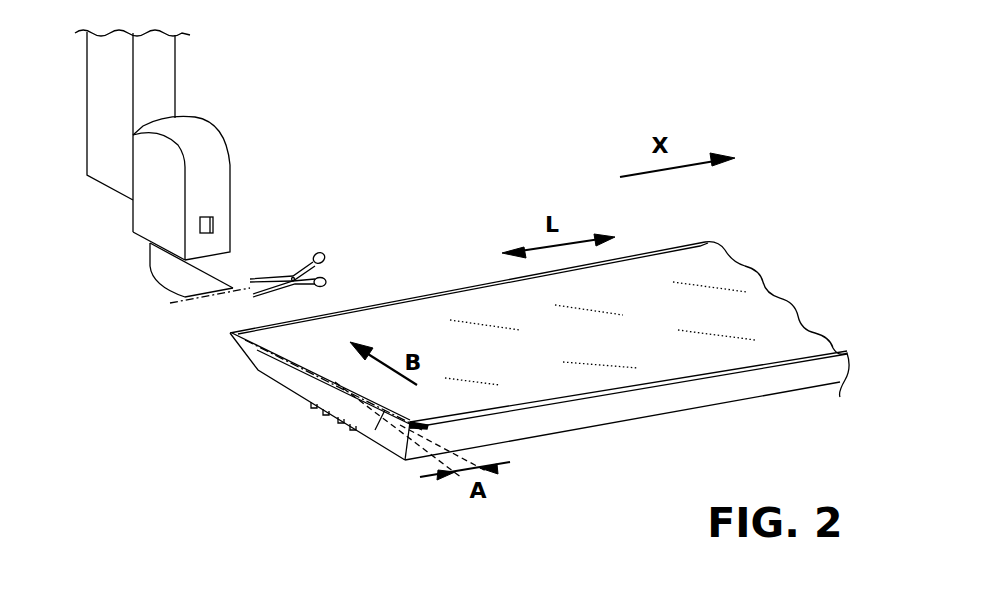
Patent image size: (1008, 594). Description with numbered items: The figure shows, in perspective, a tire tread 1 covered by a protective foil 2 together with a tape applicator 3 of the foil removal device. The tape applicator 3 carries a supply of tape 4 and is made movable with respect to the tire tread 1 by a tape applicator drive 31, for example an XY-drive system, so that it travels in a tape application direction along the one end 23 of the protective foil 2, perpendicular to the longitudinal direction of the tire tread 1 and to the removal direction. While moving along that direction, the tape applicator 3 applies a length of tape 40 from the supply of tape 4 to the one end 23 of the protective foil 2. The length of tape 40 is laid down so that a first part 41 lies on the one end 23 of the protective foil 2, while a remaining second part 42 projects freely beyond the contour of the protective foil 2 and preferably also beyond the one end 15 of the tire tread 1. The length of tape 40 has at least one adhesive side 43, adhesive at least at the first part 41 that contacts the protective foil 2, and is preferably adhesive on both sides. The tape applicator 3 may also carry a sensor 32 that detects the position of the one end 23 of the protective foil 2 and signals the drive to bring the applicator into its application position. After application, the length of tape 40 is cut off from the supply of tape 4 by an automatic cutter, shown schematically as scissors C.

The tire tread 1 is at (543, 422).
The protective foil 2 is at (683, 400).
The tape applicator 3 is at (218, 168).
The tape applicator drive 31 is at (150, 85).
The sensor 32 is at (213, 225).
The supply of tape 4 is at (180, 280).
The length of tape 40 is at (260, 345).
The first part of the length of tape 41 is at (310, 352).
The second part of the length of tape 42 is at (343, 388).
The adhesive side 43 is at (280, 383).
The one end of the tire tread 15 is at (303, 398).
The one end of the protective foil 23 is at (385, 410).
The scissors C is at (280, 272).